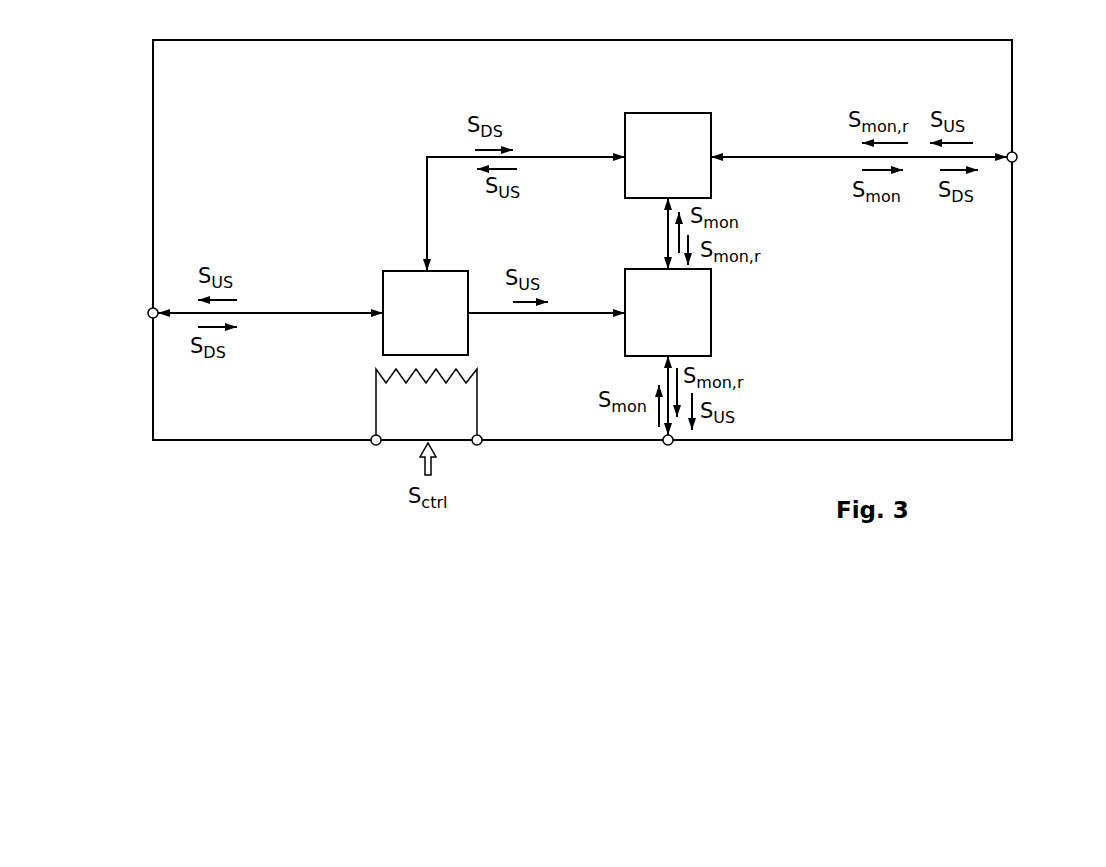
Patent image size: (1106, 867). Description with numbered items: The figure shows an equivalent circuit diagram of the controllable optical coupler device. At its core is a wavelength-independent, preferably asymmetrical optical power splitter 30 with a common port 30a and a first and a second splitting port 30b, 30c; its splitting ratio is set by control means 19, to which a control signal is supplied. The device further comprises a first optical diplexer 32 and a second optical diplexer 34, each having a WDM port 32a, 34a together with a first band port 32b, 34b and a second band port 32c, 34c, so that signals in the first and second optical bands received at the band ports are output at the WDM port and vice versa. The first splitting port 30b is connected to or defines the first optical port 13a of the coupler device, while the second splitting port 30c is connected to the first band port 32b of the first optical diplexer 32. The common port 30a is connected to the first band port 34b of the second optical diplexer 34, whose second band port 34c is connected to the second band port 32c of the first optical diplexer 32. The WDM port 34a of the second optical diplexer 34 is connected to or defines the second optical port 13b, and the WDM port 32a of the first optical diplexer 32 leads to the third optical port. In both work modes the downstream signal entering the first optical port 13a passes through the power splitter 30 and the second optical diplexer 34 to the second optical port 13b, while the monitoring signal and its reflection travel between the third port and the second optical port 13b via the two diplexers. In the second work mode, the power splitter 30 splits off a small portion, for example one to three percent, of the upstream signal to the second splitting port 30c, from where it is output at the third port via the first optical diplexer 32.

The first optical port 13a is at (148, 310).
The second optical port 13b is at (1018, 160).
The control means 19 is at (492, 392).
The optical power splitter 30 is at (395, 273).
The common port 30a is at (430, 266).
The first splitting port 30b is at (383, 318).
The second splitting port 30c is at (468, 315).
The first optical diplexer 32 is at (630, 297).
The WDM port 32a is at (664, 360).
The first band port 32b is at (622, 317).
The second band port 32c is at (666, 268).
The second optical diplexer 34 is at (663, 118).
The WDM port 34a is at (713, 155).
The first band port 34b is at (622, 155).
The second band port 34c is at (665, 204).